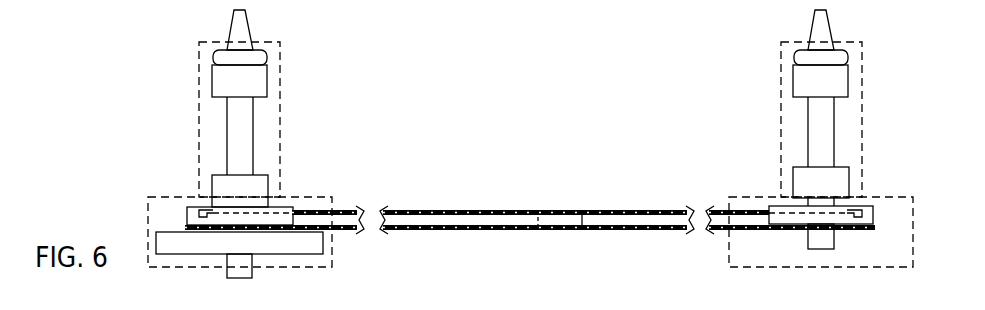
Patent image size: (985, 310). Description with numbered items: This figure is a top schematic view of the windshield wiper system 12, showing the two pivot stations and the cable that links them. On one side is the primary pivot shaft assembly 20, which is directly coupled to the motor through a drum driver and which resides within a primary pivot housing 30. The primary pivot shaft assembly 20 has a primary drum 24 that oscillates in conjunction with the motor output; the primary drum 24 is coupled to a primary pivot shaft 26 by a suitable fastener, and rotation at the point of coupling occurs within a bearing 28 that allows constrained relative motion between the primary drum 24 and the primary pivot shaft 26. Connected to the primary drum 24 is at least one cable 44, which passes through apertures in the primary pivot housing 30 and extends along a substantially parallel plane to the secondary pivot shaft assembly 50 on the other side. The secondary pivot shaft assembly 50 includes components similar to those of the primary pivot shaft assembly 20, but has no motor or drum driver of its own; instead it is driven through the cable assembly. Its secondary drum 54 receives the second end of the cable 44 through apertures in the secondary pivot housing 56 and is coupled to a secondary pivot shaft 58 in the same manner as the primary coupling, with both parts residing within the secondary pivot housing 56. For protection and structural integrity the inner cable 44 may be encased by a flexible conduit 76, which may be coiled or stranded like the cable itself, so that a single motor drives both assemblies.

The wiper system 12 is at (428, 90).
The primary pivot shaft assembly 20 is at (148, 134).
The primary drum 24 is at (194, 206).
The primary pivot shaft 26 is at (242, 122).
The bearing 28 is at (255, 183).
The primary pivot housing 30 is at (197, 82).
The cable 44 is at (523, 212).
The secondary pivot shaft assembly 50 is at (902, 104).
The secondary drum 54 is at (873, 212).
The secondary pivot housing 56 is at (863, 57).
The secondary pivot shaft 58 is at (822, 118).
The flexible conduit 76 is at (563, 230).